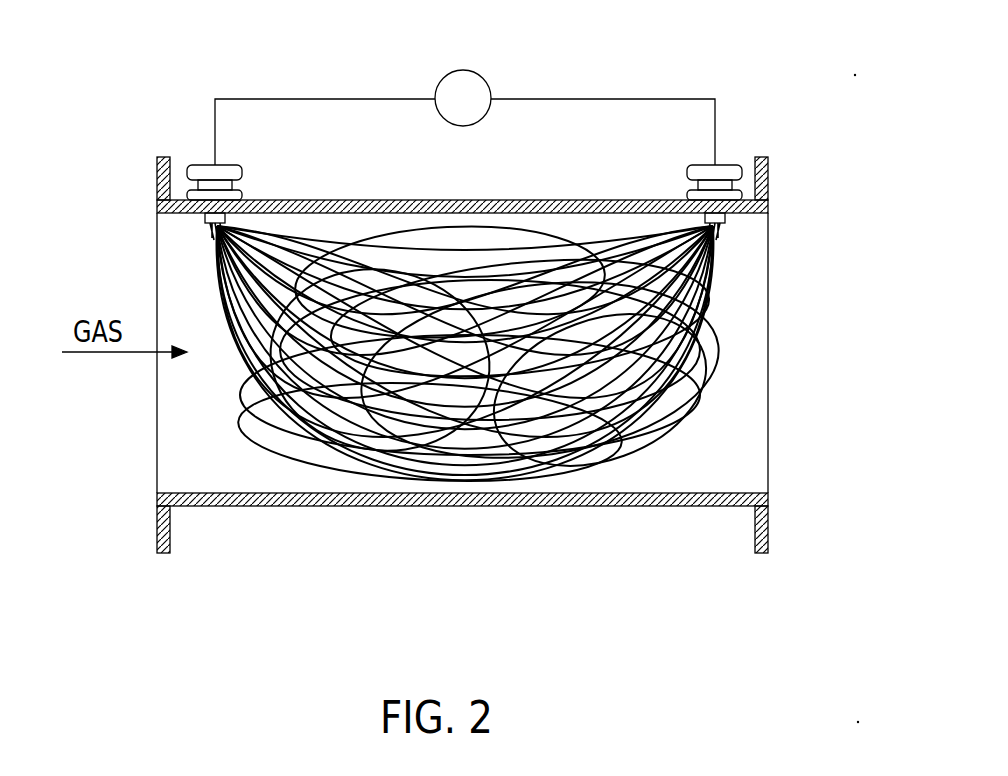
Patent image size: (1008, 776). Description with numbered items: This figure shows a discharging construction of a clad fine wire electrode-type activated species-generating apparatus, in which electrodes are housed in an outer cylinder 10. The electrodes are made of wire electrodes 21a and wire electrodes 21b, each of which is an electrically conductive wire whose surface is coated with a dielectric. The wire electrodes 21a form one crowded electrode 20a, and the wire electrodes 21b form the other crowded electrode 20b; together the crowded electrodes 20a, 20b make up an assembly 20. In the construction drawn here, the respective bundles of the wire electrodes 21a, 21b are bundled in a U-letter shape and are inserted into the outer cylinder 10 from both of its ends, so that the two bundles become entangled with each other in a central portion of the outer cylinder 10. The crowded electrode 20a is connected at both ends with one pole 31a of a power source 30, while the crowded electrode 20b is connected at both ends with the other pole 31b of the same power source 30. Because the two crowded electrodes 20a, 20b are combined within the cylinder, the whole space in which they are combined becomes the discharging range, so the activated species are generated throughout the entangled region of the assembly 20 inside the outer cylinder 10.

The outer cylinder 10 is at (490, 506).
The assembly of crowded electrodes 20 is at (652, 468).
The crowded electrode 20a is at (202, 427).
The crowded electrode 20b is at (730, 349).
The wire electrodes 21a is at (222, 366).
The wire electrodes 21b is at (720, 294).
The power source 30 is at (487, 82).
The pole of power source 31a is at (197, 165).
The pole of power source 31b is at (730, 165).